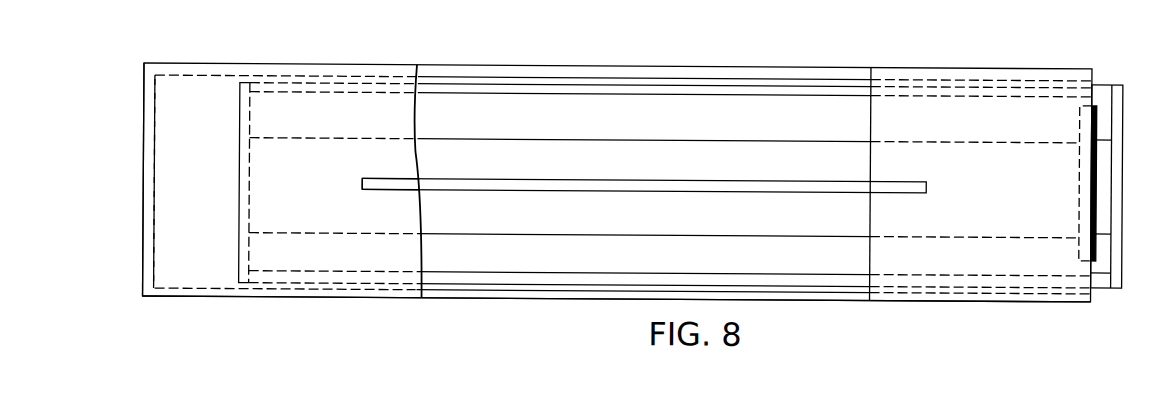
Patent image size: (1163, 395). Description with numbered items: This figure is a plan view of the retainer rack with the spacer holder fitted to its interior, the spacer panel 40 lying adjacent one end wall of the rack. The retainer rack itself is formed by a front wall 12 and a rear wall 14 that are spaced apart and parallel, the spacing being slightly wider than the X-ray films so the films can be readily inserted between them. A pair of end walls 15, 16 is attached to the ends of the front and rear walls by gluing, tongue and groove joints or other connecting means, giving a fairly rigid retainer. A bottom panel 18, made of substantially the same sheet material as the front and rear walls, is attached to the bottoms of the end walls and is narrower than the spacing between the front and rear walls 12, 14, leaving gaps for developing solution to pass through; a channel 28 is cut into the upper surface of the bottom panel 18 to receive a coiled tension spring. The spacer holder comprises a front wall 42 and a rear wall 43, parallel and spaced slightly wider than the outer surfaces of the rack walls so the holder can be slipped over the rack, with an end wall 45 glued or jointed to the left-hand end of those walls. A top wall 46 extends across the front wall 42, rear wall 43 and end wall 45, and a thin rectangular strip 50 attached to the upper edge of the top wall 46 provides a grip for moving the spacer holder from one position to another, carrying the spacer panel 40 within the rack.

The rear wall 43 is at (577, 64).
The rear wall 14 is at (537, 89).
The bottom panel 18 is at (687, 226).
The front wall 12 is at (497, 276).
The channel 28 is at (695, 175).
The thin rectangular strip 50 is at (377, 187).
The end wall 15 is at (245, 208).
The end wall 45 is at (148, 225).
The front wall 42 is at (433, 297).
The top wall 46 is at (216, 276).
The spacer panel 40 is at (1083, 180).
The end wall 16 is at (1117, 243).